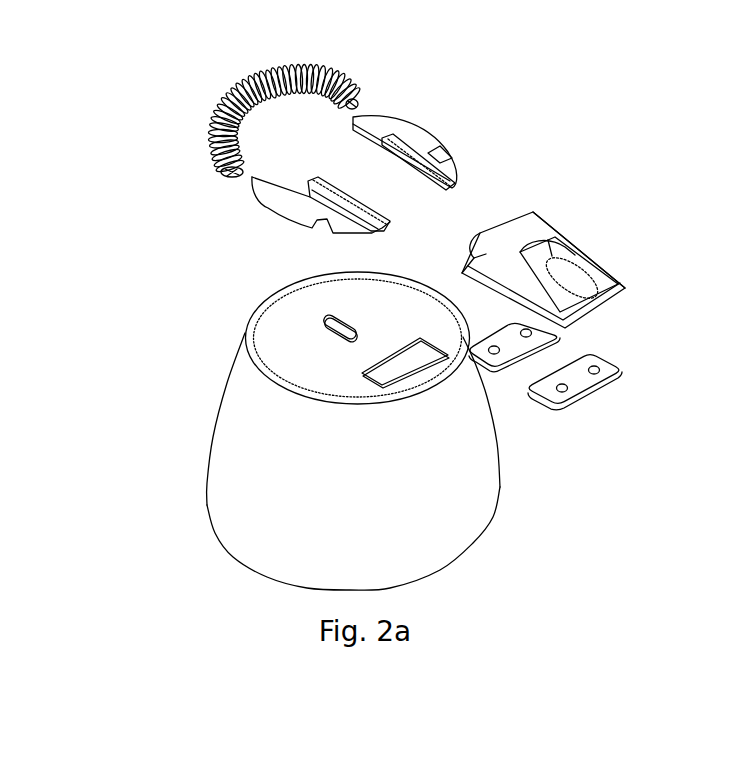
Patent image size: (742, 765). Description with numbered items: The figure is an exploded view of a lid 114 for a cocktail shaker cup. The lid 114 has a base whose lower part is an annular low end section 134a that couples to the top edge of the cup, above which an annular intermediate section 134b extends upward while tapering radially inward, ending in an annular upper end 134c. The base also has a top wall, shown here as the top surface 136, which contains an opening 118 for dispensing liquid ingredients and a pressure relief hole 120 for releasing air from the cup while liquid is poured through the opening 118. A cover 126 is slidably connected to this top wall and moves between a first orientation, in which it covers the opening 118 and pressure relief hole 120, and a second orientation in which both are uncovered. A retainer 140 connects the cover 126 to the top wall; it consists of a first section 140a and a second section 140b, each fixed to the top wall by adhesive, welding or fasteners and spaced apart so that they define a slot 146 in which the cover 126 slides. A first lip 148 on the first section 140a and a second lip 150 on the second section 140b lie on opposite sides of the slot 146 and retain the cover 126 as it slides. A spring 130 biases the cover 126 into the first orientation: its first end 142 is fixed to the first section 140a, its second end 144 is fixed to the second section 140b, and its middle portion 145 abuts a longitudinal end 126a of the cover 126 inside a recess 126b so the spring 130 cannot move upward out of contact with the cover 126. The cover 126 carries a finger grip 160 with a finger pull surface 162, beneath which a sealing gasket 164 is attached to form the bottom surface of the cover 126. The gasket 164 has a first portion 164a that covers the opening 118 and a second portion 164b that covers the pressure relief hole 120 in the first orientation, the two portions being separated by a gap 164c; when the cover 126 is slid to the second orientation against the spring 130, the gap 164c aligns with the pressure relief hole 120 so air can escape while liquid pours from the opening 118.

The lid 114 is at (137, 592).
The opening 118 is at (408, 344).
The pressure relief hole 120 is at (348, 321).
The cover 126 is at (525, 237).
The longitudinal end of the cover 126a is at (468, 232).
The recess of the cover 126b is at (480, 265).
The spring 130 is at (256, 100).
The annular low end section 134a is at (232, 522).
The annular intermediate section 134b is at (215, 423).
The annular upper end 134c is at (247, 338).
The top surface 136 is at (293, 318).
The retainer 140 is at (345, 157).
The first section of the retainer 140a is at (282, 223).
The second section of the retainer 140b is at (434, 132).
The first end of the spring 142 is at (216, 170).
The second end of the spring 144 is at (353, 77).
The middle portion of the spring 145 is at (238, 78).
The slot 146 is at (450, 196).
The first lip 148 is at (370, 218).
The second lip 150 is at (428, 165).
The finger grip 160 is at (528, 230).
The finger pull surface 162 is at (537, 255).
The sealing gasket 164 is at (591, 383).
The first portion of the gasket 164a is at (617, 353).
The second portion of the gasket 164b is at (500, 382).
The gap 164c is at (583, 342).